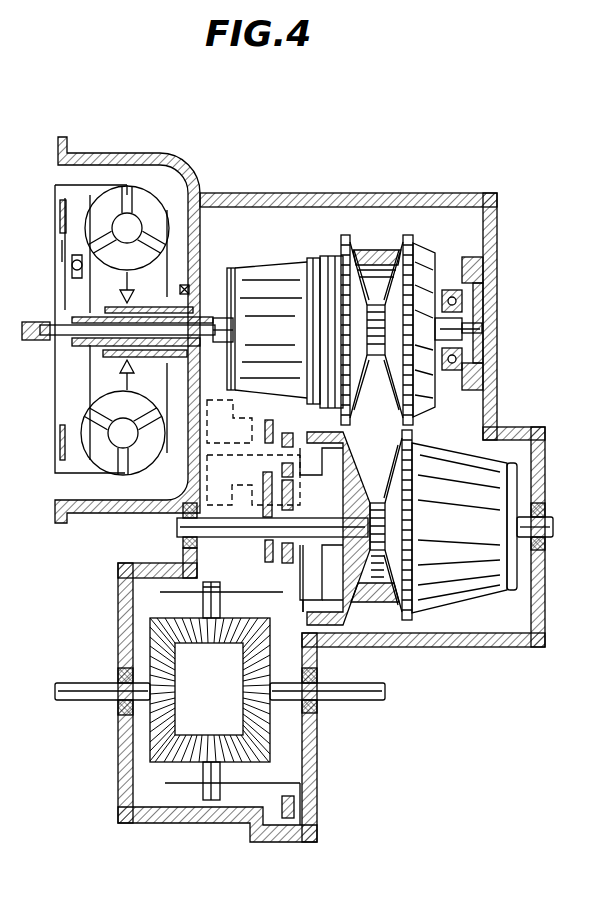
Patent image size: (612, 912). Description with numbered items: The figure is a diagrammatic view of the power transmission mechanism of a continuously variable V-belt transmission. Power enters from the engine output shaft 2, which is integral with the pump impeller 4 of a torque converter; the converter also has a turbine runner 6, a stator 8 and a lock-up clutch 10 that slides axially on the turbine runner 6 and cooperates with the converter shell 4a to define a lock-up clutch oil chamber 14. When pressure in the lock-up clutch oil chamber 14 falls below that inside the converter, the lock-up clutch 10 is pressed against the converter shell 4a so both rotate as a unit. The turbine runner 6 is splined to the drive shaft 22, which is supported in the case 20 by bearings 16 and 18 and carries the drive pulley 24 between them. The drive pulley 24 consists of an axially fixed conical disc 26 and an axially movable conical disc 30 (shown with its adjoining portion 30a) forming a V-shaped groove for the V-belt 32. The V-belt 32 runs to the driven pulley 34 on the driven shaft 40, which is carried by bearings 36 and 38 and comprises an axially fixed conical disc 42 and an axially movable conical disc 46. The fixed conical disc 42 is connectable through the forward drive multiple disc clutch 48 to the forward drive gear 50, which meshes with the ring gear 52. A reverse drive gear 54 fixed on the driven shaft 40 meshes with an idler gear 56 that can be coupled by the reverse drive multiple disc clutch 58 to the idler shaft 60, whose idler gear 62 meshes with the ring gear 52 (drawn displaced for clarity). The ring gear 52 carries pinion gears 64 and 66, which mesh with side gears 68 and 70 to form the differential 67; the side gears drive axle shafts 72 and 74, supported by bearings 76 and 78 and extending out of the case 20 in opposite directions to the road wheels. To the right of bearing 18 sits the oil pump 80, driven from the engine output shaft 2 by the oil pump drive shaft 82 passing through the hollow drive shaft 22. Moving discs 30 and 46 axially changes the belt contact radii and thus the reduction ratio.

The engine output shaft 2 is at (34, 320).
The pump impeller 4 is at (160, 208).
The converter shell 4a is at (57, 426).
The turbine runner 6 is at (92, 212).
The stator 8 is at (143, 268).
The lock-up clutch 10 is at (60, 218).
The lock-up clutch oil chamber 14 is at (62, 252).
The bearing 16 is at (207, 315).
The bearing 18 is at (446, 290).
The case 20 is at (498, 207).
The drive shaft 22 is at (212, 345).
The drive pulley 24 is at (406, 230).
The axially fixed conical disc 26 is at (422, 252).
The axially movable conical disc 30 is at (343, 247).
The ring 30a is at (314, 260).
The V-belt 32 is at (378, 257).
The driven pulley 34 is at (383, 622).
The bearing 36 is at (183, 550).
The bearing 38 is at (546, 505).
The driven shaft 40 is at (312, 518).
The axially fixed conical disc 42 is at (323, 647).
The axially movable conical disc 46 is at (410, 432).
The forward drive multiple disc clutch 48 is at (325, 586).
The forward drive gear 50 is at (280, 553).
The ring gear 52 is at (310, 590).
The reverse drive gear 54 is at (262, 553).
The idler gear 56 is at (265, 435).
The reverse drive multiple disc clutch 58 is at (235, 390).
The idler shaft 60 is at (217, 457).
The idler gear 62 is at (292, 442).
The pinion gear 64 is at (236, 622).
The pinion gear 66 is at (256, 760).
The differential 67 is at (193, 772).
The side gear 68 is at (177, 662).
The side gear 70 is at (243, 702).
The axle shaft 72 is at (90, 700).
The axle shaft 74 is at (378, 700).
The bearing 76 is at (117, 672).
The bearing 78 is at (318, 712).
The oil pump 80 is at (502, 273).
The oil pump drive shaft 82 is at (60, 348).